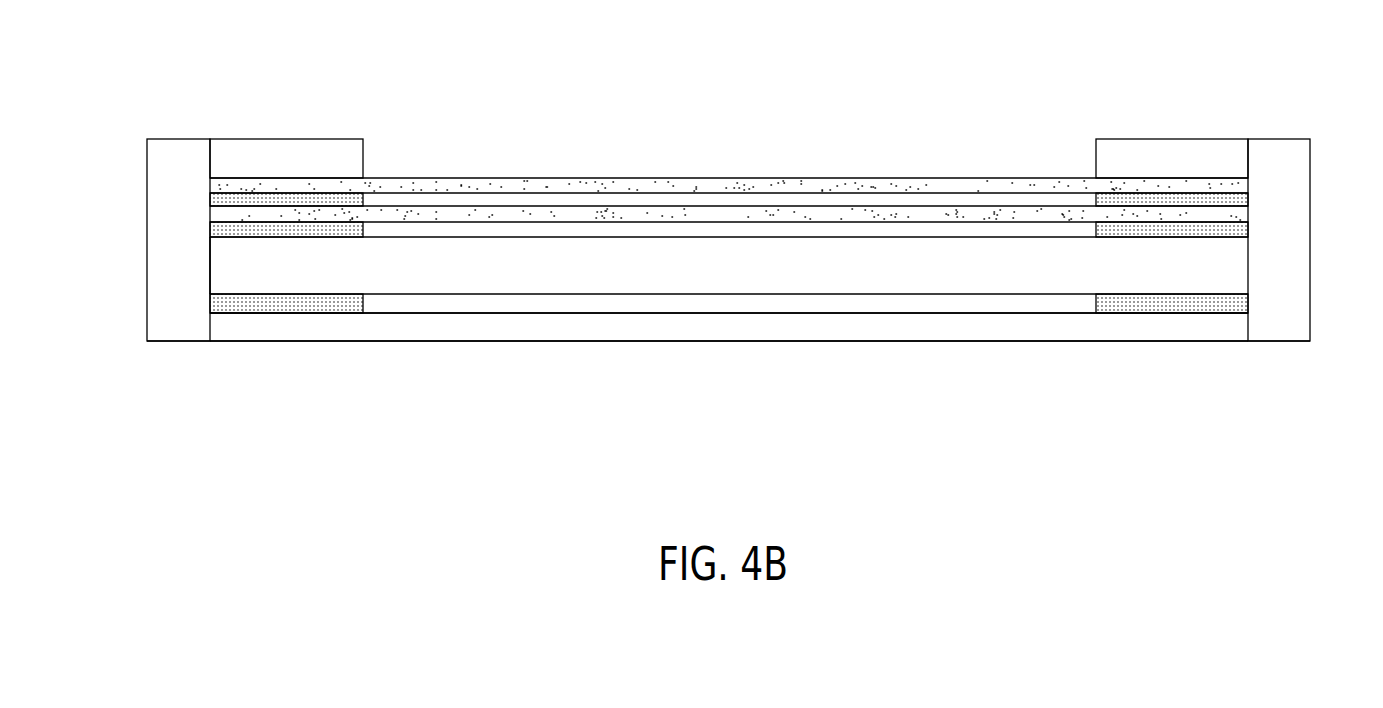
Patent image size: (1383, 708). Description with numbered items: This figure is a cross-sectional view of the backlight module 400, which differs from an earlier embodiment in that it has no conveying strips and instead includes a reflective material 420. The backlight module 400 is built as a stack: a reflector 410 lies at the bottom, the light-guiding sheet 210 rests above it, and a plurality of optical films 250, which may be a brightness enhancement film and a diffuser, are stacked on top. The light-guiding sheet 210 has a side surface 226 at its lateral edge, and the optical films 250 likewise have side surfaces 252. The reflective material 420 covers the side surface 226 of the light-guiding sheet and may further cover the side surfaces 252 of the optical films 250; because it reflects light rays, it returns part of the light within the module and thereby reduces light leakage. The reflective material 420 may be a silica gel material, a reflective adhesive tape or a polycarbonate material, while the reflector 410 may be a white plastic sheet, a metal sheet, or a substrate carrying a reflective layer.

The backlight module 400 is at (1233, 427).
The reflective material 420 is at (1275, 155).
The optical films 250 is at (220, 189).
The side surfaces of the optical films 252 is at (1249, 186).
The light-guiding sheet 210 is at (1238, 265).
The side surface 226 is at (210, 276).
The reflector 410 is at (220, 327).